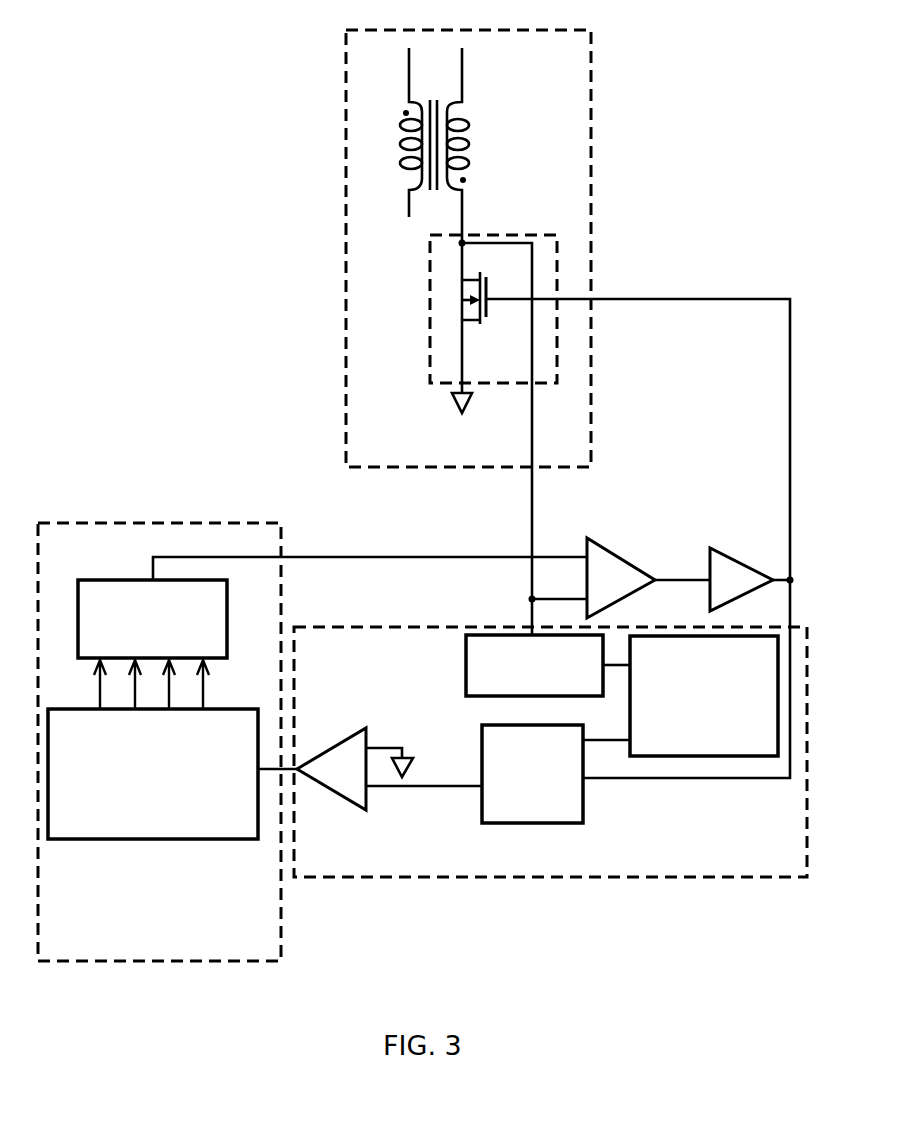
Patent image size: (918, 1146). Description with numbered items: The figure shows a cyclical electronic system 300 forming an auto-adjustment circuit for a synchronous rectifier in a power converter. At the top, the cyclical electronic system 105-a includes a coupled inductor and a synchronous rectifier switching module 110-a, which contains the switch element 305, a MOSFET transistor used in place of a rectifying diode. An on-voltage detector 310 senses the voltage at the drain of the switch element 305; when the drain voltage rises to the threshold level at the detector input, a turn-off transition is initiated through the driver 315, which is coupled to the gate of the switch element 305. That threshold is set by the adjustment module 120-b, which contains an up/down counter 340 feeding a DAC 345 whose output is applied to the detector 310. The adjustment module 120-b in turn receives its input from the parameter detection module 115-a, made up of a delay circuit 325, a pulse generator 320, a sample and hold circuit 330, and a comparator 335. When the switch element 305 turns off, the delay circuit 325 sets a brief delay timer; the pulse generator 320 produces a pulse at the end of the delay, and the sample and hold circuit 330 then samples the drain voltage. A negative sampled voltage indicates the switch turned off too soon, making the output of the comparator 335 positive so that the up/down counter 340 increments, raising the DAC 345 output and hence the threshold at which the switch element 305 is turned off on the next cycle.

The cyclical electronic system 300 is at (666, 957).
The cyclical electronic system 105-a is at (345, 167).
The synchronous rectifier switching module 110-a is at (429, 290).
The switch element 305 is at (470, 323).
The adjustment module 120-b is at (155, 522).
The DAC 345 is at (98, 579).
The up/down counter 340 is at (165, 840).
The parameter detection module 115-a is at (330, 627).
The delay circuit 325 is at (465, 675).
The pulse generator 320 is at (704, 696).
The sample and hold circuit 330 is at (480, 748).
The on-voltage detector 310 is at (623, 555).
The driver 315 is at (727, 553).
The comparator 335 is at (350, 735).